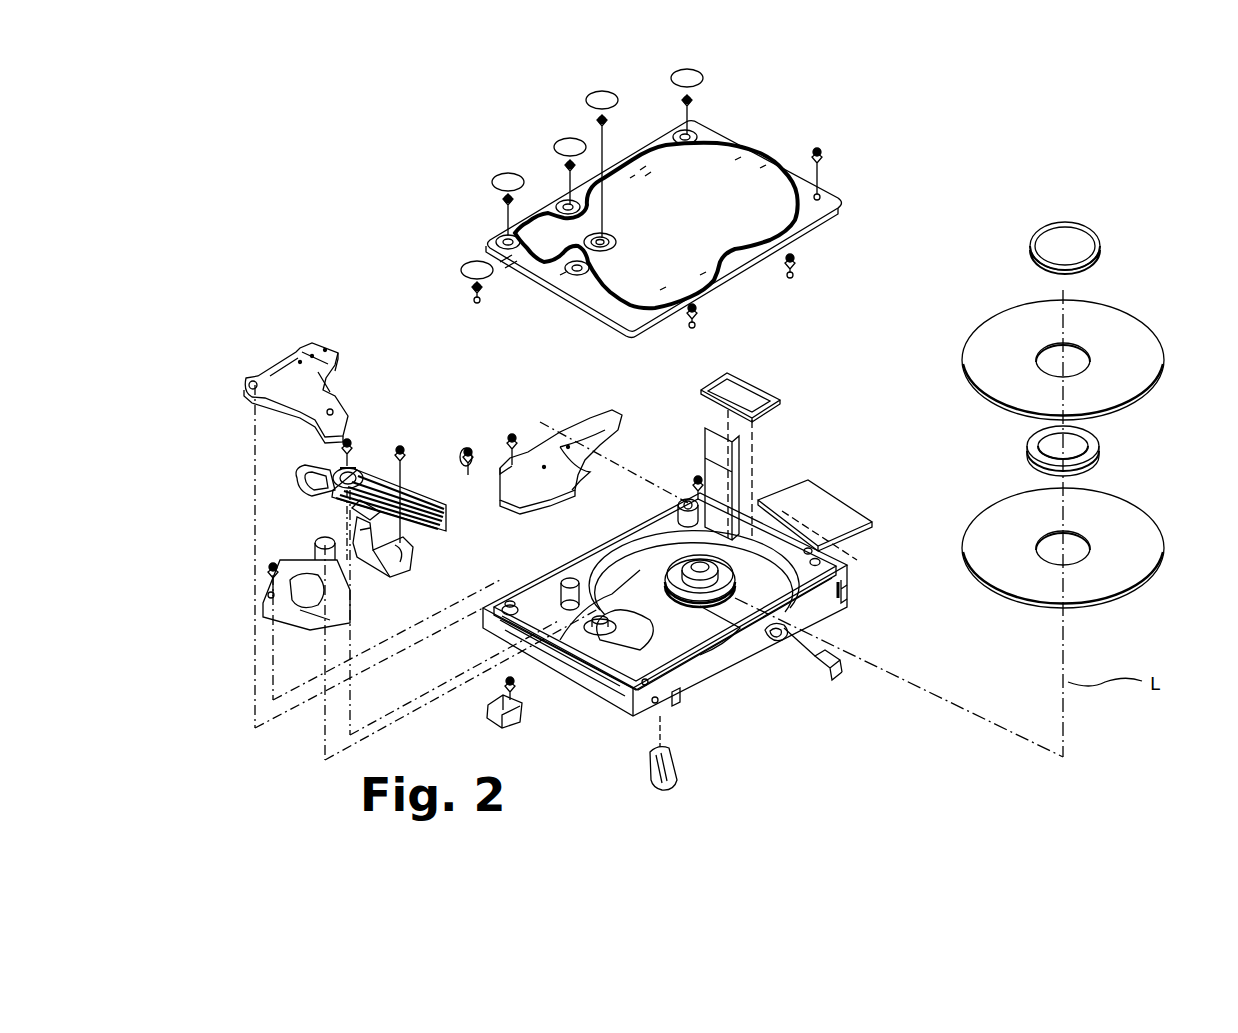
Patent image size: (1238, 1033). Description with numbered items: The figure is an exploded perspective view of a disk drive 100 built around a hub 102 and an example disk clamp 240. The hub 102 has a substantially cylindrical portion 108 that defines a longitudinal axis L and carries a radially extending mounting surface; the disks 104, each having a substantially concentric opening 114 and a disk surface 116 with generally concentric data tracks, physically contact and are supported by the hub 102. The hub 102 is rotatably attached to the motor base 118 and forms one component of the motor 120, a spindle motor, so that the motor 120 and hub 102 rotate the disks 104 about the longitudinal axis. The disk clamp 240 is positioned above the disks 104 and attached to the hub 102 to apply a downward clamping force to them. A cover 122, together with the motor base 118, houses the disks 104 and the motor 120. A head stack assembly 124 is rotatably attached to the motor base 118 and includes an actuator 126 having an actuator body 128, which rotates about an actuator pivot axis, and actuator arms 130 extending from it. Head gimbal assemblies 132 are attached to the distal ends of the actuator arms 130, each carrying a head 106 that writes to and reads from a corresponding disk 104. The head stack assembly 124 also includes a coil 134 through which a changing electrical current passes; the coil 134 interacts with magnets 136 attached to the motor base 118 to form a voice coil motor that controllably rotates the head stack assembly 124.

The disk drive 100 is at (286, 104).
The hub 102 is at (848, 624).
The disk 104 is at (963, 350).
The head 106 is at (436, 507).
The substantially cylindrical portion 108 is at (745, 603).
The substantially concentric opening 114 is at (1078, 345).
The disk surface 116 is at (1145, 348).
The motor base 118 is at (855, 619).
The motor 120 is at (685, 505).
The cover 122 is at (828, 226).
The head stack assembly 124 is at (434, 542).
The actuator 126 is at (349, 454).
The actuator body 128 is at (357, 460).
The actuator arm 130 is at (390, 470).
The head gimbal assembly 132 is at (437, 492).
The coil 134 is at (295, 470).
The magnet 136 is at (310, 587).
The disk clamp 240 is at (1032, 247).